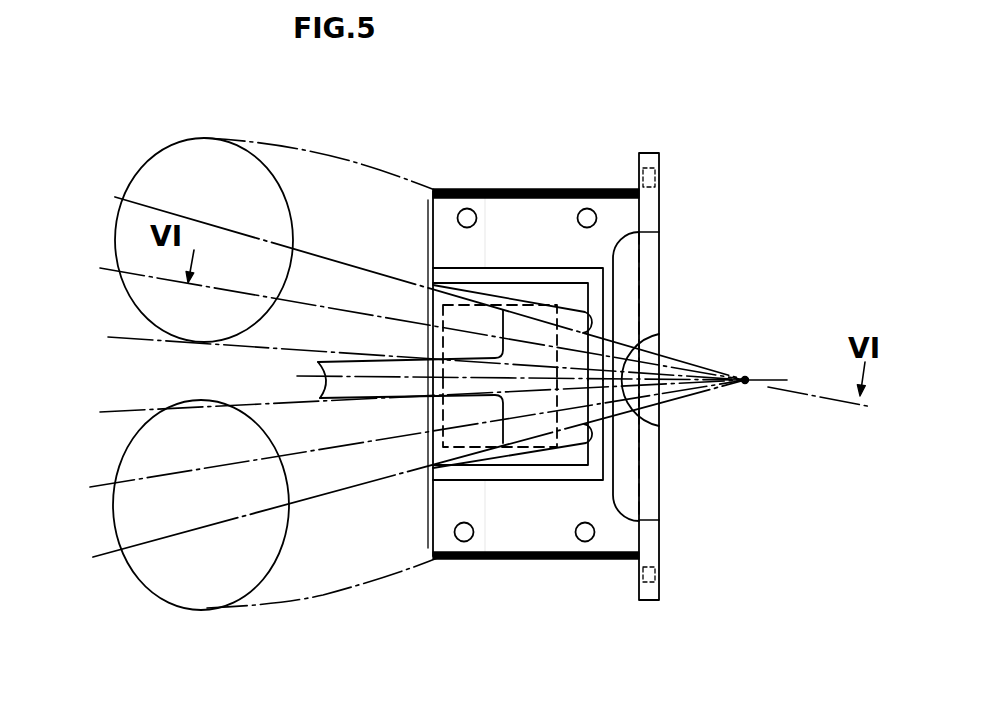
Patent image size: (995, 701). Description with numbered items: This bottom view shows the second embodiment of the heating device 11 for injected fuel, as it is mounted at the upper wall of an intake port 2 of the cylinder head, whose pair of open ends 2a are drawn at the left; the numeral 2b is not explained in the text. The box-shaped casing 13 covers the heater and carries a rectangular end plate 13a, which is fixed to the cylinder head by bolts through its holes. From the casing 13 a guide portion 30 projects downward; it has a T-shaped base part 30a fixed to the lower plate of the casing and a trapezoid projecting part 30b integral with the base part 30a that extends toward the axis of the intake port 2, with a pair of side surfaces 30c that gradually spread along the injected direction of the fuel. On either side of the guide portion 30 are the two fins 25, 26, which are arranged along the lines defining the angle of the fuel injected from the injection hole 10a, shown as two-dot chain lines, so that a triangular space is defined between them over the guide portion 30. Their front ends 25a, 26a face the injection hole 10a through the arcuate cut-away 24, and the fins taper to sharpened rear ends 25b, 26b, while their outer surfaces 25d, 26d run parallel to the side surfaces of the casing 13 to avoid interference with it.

The intake port 2 is at (337, 578).
The open end of the intake port 2a is at (172, 162).
The second optical fiber 2b is at (197, 597).
The injection hole 10a is at (747, 384).
The heating device 11 is at (670, 249).
The casing 13 is at (528, 182).
The end plate 13a is at (660, 202).
The cut-away 24 is at (650, 352).
The fin 25 is at (544, 260).
The front end of fin 25a is at (580, 315).
The rear end of fin 25b is at (448, 283).
The outer surface of fin 25d is at (491, 283).
The fin 26 is at (521, 492).
The front end of fin 26a is at (590, 425).
The rear end of fin 26b is at (448, 465).
The outer surface of fin 26d is at (487, 470).
The guide portion 30 is at (550, 468).
The base part 30a is at (542, 395).
The projecting part 30b is at (316, 363).
The side surface 30c is at (458, 356).